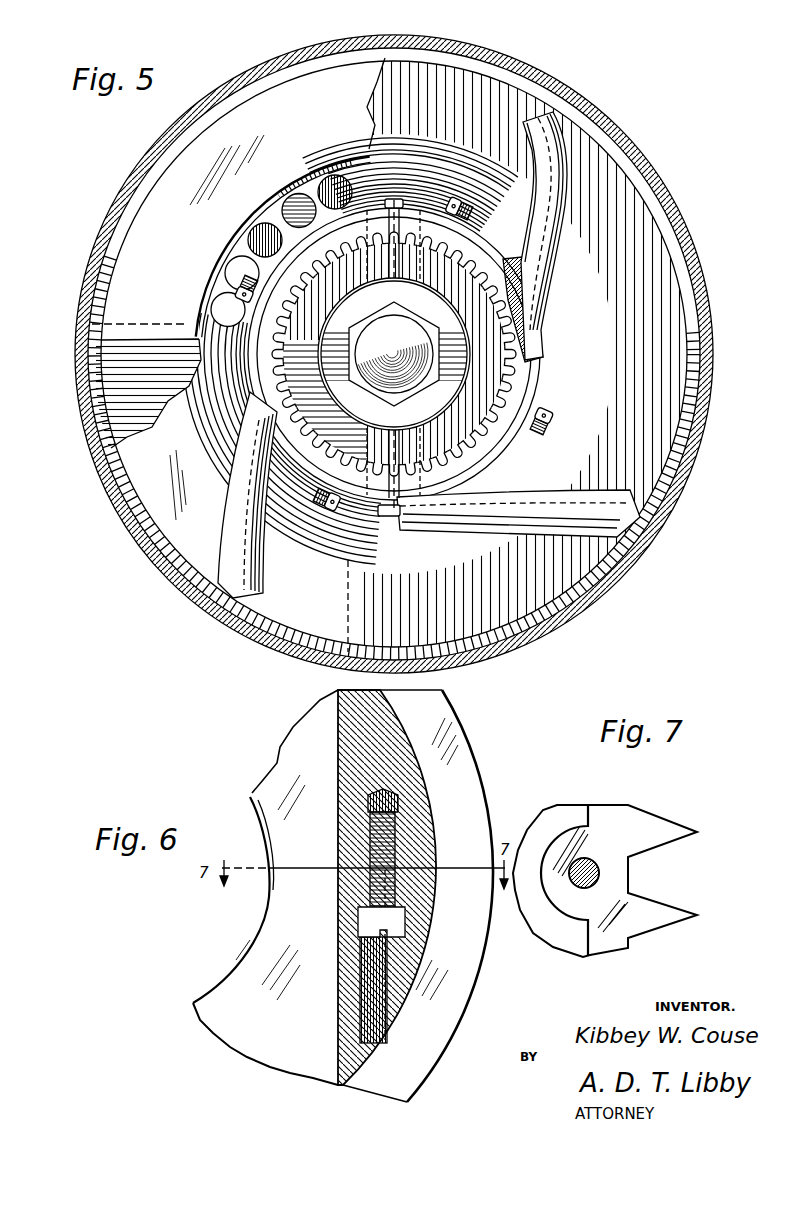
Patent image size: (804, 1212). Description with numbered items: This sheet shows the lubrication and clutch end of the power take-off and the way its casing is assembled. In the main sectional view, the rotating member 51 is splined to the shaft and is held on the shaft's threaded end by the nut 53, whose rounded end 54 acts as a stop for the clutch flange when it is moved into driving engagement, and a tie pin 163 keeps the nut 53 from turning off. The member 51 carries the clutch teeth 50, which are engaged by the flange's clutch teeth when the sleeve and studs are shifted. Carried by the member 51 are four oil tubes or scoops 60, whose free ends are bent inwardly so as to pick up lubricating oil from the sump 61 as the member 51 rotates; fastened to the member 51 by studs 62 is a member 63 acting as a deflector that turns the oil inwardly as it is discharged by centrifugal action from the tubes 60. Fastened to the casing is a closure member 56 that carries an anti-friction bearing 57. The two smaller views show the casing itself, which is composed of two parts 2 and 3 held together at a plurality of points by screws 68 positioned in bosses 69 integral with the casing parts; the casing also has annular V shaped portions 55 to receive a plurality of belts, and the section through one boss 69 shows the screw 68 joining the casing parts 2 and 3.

In FIG. 5, the clutch teeth 50 is at (470, 255).
In FIG. 5, the member 51 is at (520, 387).
In FIG. 5, the nut 53 is at (368, 299).
In FIG. 5, the rounded end 54 is at (367, 342).
In FIG. 5, the closure member 56 is at (98, 280).
In FIG. 5, the anti-friction bearing 57 is at (287, 205).
In FIG. 5, the oil tubes or scoops 60 is at (338, 180).
In FIG. 5, the sump 61 is at (400, 644).
In FIG. 5, the studs 62 is at (240, 283).
In FIG. 5, the member (deflector) 63 is at (658, 265).
In FIG. 5, the tie pin 163 is at (395, 517).
In FIG. 6, the casing part 2 is at (467, 807).
In FIG. 6, the casing part 3 is at (447, 1000).
In FIG. 7, the casing part 3 is at (627, 833).
In FIG. 6, the annular V shaped portions 55 is at (457, 760).
In FIG. 7, the annular V shaped portions 55 is at (680, 830).
In FIG. 6, the screws 68 is at (373, 890).
In FIG. 7, the screws 68 is at (585, 857).
In FIG. 6, the bosses 69 is at (340, 880).
In FIG. 7, the bosses 69 is at (560, 902).